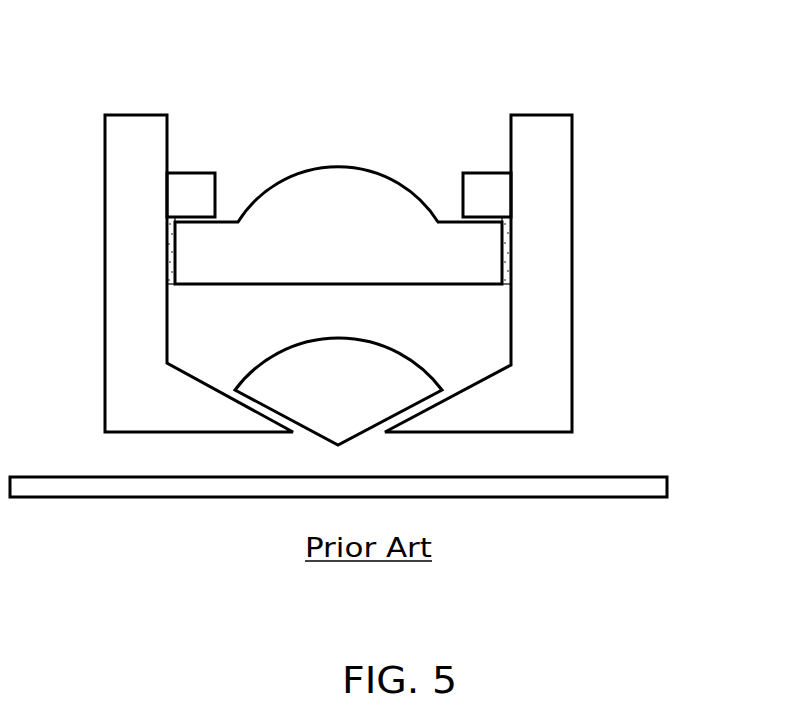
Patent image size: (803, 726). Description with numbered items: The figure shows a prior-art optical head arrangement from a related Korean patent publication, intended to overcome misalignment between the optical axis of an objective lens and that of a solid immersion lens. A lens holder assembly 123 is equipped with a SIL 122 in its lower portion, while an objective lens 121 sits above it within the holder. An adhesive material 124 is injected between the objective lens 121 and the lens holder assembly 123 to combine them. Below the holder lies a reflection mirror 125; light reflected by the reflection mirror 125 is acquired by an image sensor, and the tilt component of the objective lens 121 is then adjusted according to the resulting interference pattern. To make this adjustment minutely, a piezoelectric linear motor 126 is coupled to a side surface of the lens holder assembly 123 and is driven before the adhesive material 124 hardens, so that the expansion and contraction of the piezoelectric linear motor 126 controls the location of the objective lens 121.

The objective lens 121 is at (328, 178).
The SIL 122 is at (383, 363).
The lens holder assembly 123 is at (543, 126).
The adhesive material 124 is at (168, 250).
The reflection mirror 125 is at (667, 484).
The piezoelectric linear motor 126 is at (482, 184).